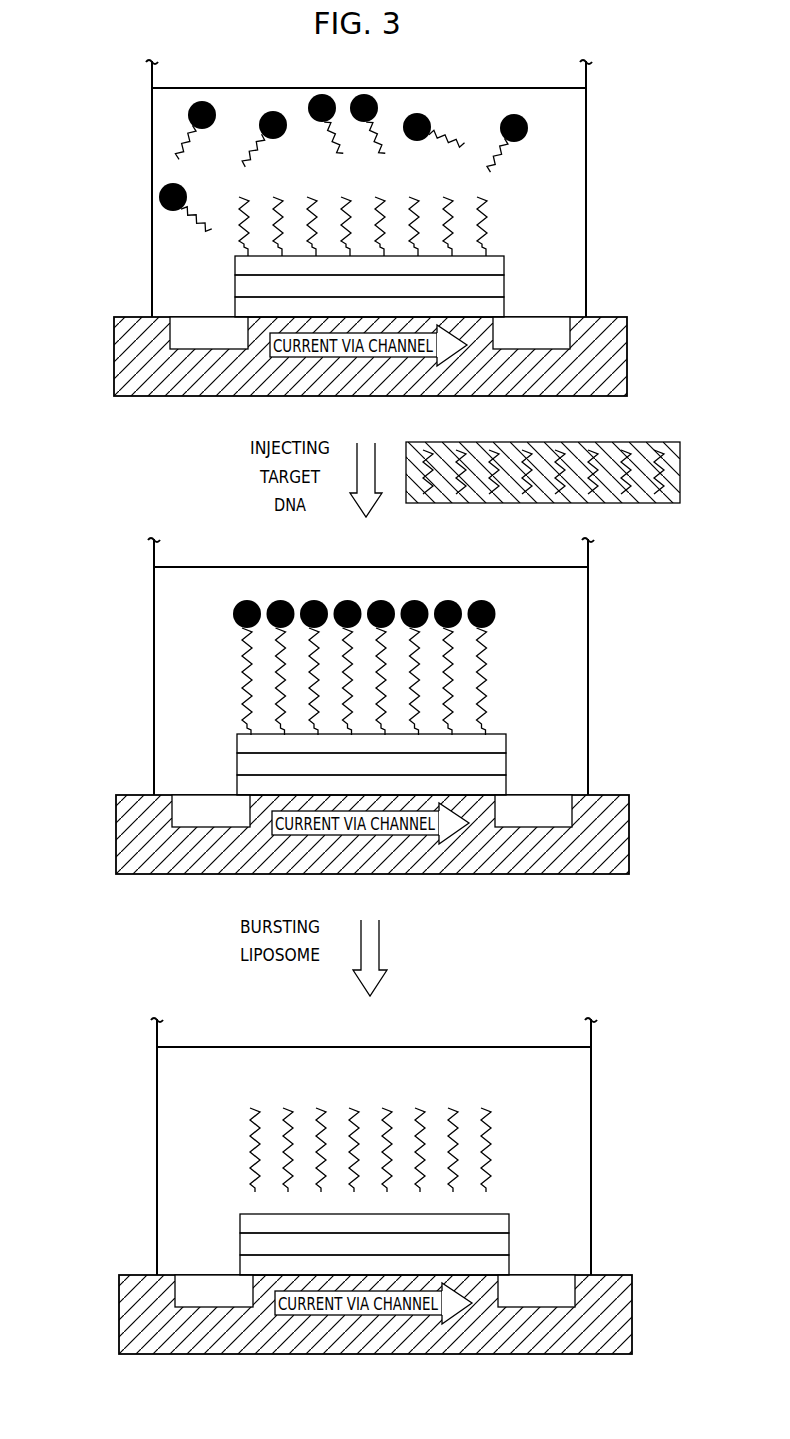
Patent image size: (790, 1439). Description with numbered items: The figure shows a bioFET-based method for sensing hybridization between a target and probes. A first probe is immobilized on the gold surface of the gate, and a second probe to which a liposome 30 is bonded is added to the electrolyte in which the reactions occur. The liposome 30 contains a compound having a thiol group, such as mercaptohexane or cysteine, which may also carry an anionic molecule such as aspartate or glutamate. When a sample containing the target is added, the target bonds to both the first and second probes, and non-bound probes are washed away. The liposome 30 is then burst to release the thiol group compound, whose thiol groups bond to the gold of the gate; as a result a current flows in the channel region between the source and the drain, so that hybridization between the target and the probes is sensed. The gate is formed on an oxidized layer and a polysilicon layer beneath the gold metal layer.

The liposome 30 is at (519, 112).